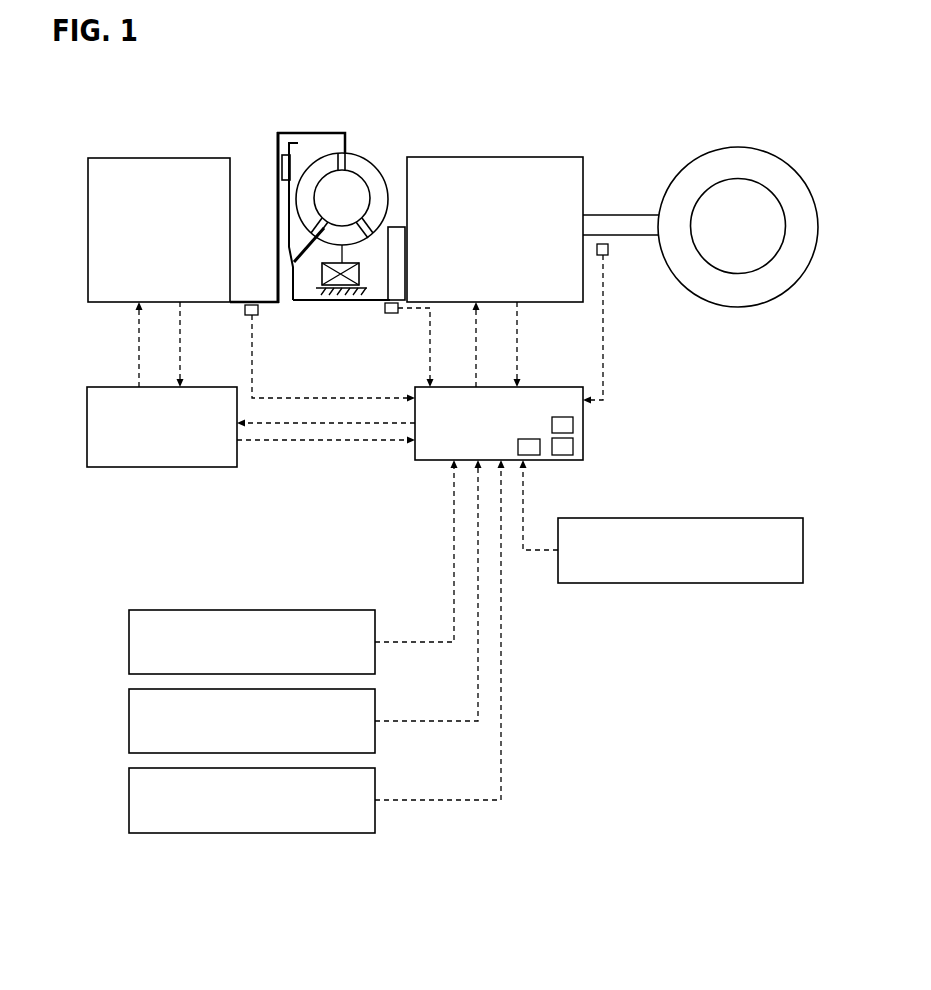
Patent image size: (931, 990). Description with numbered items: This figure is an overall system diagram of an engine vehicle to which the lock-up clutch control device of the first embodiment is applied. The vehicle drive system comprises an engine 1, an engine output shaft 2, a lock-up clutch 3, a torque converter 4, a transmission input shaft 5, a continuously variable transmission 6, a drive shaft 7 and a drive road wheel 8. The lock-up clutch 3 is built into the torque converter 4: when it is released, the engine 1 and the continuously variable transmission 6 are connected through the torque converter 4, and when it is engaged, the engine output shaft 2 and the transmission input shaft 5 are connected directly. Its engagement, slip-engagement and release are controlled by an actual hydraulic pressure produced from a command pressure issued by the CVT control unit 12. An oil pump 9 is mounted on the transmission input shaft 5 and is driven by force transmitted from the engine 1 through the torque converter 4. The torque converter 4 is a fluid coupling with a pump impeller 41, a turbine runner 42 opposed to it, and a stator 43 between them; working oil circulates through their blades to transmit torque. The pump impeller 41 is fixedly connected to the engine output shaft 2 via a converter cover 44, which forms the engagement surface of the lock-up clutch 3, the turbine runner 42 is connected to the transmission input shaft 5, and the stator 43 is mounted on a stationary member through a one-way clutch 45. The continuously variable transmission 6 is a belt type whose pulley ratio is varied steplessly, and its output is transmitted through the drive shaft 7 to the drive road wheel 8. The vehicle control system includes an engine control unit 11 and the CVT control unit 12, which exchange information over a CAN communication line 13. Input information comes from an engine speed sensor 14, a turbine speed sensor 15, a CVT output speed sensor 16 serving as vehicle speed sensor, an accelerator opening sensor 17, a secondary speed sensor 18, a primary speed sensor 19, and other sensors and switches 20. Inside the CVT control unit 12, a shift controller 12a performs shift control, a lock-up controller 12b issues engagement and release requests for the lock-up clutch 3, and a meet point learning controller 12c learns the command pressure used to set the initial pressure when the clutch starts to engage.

The engine 1 is at (158, 152).
The engine output shaft 2 is at (240, 293).
The lock-up clutch 3 is at (279, 160).
The torque converter 4 is at (291, 126).
The pump impeller 41 is at (368, 182).
The turbine runner 42 is at (320, 168).
The stator 43 is at (324, 238).
The converter cover 44 is at (275, 210).
The one-way clutch 45 is at (352, 273).
The transmission input shaft 5 is at (387, 291).
The continuously variable transmission 6 is at (491, 150).
The drive shaft 7 is at (619, 208).
The drive road wheel 8 is at (741, 140).
The oil pump 9 is at (401, 219).
The engine control unit 11 is at (113, 380).
The CVT control unit 12 is at (558, 380).
The shift controller 12a is at (574, 425).
The lock-up controller 12b is at (574, 448).
The meet point learning controller 12c is at (530, 456).
The CAN communication line 13 is at (272, 430).
The engine speed sensor 14 is at (246, 312).
The turbine speed sensor 15 is at (392, 316).
The CVT output speed sensor 16 is at (608, 250).
The accelerator opening sensor 17 is at (713, 517).
The secondary speed sensor 18 is at (128, 643).
The primary speed sensor 19 is at (128, 722).
The other sensors and switches 20 is at (128, 802).